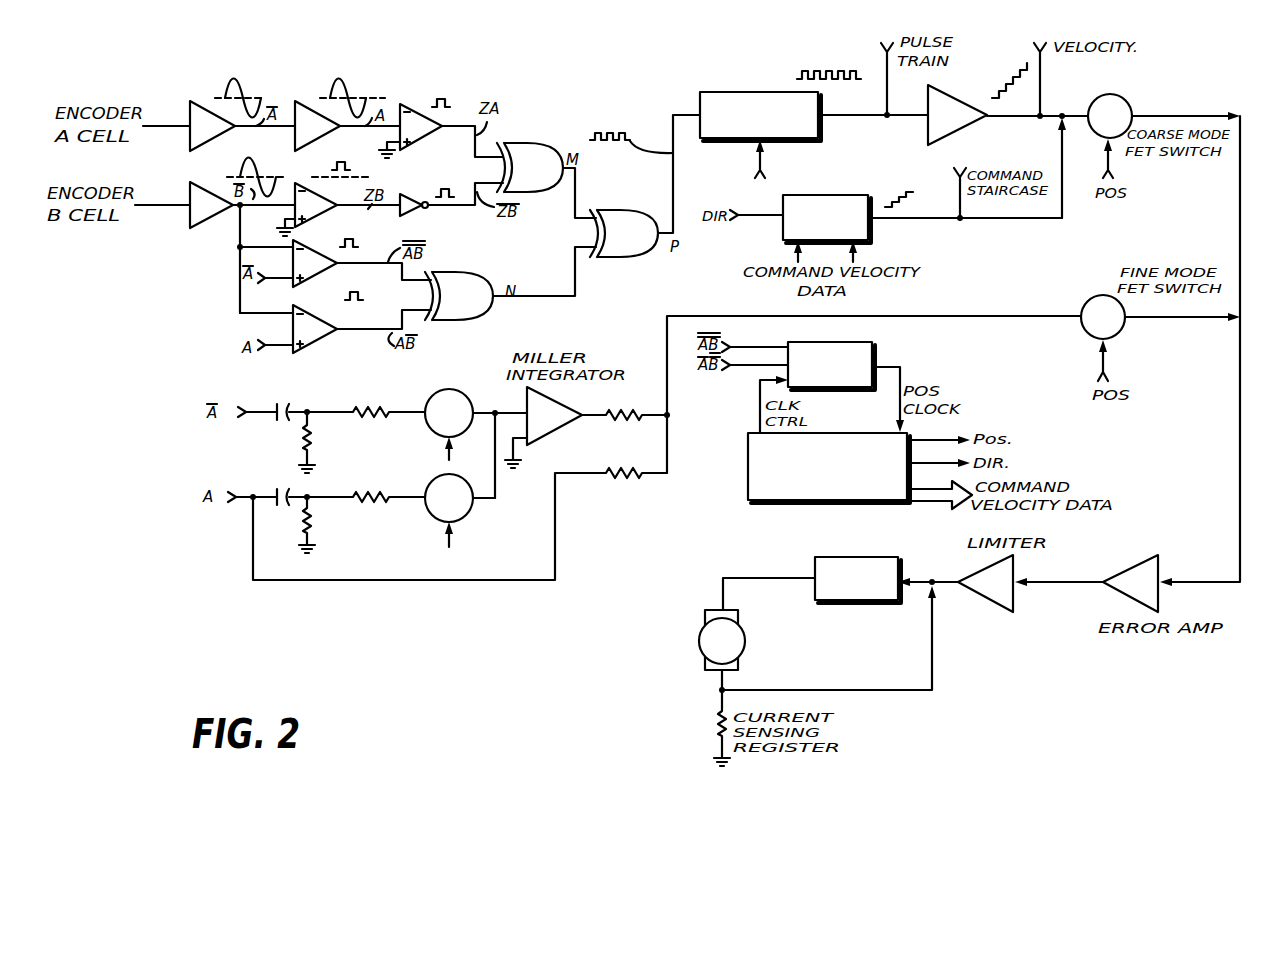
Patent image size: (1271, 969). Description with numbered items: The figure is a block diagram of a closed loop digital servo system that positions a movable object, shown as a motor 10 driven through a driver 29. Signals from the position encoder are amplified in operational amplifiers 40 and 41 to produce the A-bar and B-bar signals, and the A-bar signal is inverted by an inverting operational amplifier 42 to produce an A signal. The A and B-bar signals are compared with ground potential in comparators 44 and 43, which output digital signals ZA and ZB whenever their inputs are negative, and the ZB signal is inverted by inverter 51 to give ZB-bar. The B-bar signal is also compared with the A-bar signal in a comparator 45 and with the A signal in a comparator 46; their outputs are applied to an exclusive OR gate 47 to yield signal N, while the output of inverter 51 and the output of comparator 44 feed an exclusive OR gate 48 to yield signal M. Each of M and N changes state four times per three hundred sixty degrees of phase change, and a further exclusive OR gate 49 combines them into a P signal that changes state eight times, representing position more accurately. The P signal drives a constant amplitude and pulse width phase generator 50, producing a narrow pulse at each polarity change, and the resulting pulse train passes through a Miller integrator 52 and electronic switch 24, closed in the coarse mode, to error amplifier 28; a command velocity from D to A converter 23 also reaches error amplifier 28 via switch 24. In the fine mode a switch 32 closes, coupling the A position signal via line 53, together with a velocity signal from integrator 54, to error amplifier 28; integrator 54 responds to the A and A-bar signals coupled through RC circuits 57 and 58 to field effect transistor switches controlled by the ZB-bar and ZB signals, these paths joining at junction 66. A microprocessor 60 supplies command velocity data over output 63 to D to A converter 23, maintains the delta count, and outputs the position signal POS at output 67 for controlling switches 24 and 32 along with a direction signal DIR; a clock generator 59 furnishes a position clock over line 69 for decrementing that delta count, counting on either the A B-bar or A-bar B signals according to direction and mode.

The motor 10 is at (700, 633).
The D to A converter 23 is at (824, 195).
The electronic switch 24 is at (1127, 104).
The error amplifier 28 is at (1142, 565).
The driver 29 is at (852, 557).
The switch 32 is at (1084, 304).
The operational amplifier 40 is at (193, 100).
The operational amplifier 41 is at (203, 182).
The inverting operational amplifier 42 is at (304, 101).
The comparator 43 is at (315, 218).
The comparator 44 is at (408, 103).
The comparator 45 is at (322, 273).
The comparator 46 is at (316, 347).
The exclusive OR gate 47 is at (460, 273).
The exclusive OR gate 48 is at (541, 139).
The exclusive OR gate 49 is at (618, 257).
The constant amplitude and pulse width phase generator 50 is at (733, 92).
The inverter 51 is at (416, 217).
The Miller integrator 52 is at (928, 137).
The line 53 is at (556, 523).
The integrator 54 is at (547, 440).
The RC circuit 57 is at (325, 422).
The RC circuit 58 is at (325, 507).
The clock generator 59 is at (876, 343).
The microprocessor 60 is at (748, 492).
The command velocity data output 63 is at (921, 469).
The summing junction 66 is at (670, 414).
The position output 67 is at (918, 441).
The position clock line 69 is at (903, 368).